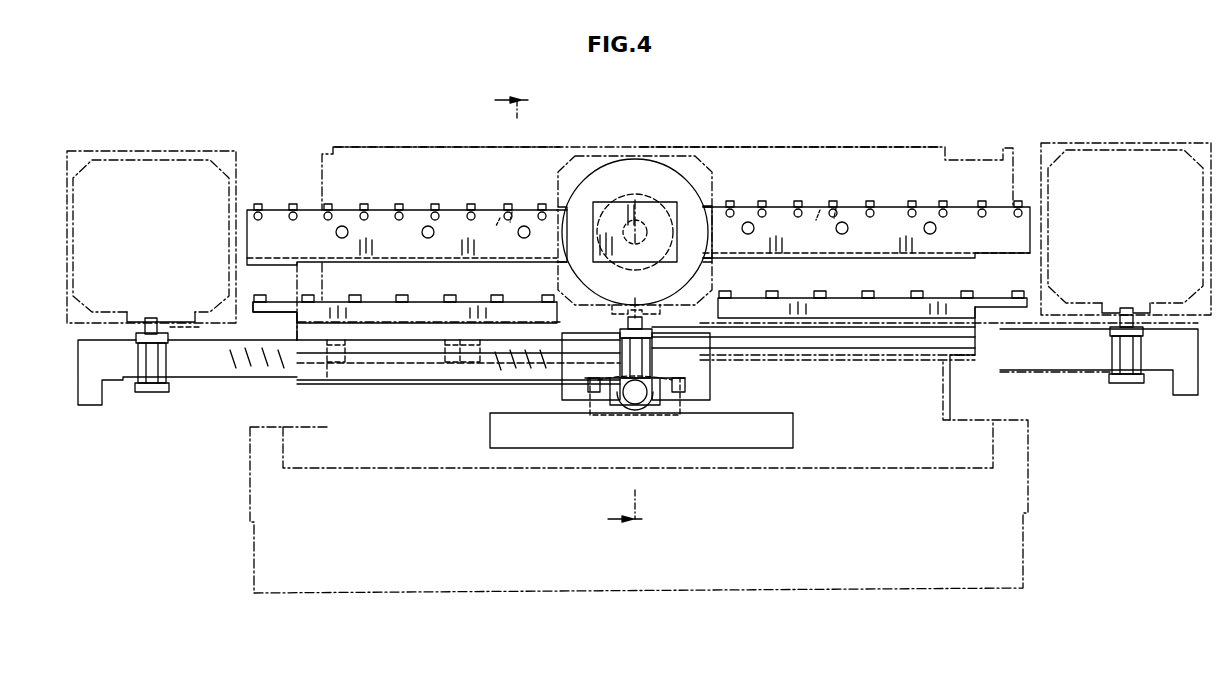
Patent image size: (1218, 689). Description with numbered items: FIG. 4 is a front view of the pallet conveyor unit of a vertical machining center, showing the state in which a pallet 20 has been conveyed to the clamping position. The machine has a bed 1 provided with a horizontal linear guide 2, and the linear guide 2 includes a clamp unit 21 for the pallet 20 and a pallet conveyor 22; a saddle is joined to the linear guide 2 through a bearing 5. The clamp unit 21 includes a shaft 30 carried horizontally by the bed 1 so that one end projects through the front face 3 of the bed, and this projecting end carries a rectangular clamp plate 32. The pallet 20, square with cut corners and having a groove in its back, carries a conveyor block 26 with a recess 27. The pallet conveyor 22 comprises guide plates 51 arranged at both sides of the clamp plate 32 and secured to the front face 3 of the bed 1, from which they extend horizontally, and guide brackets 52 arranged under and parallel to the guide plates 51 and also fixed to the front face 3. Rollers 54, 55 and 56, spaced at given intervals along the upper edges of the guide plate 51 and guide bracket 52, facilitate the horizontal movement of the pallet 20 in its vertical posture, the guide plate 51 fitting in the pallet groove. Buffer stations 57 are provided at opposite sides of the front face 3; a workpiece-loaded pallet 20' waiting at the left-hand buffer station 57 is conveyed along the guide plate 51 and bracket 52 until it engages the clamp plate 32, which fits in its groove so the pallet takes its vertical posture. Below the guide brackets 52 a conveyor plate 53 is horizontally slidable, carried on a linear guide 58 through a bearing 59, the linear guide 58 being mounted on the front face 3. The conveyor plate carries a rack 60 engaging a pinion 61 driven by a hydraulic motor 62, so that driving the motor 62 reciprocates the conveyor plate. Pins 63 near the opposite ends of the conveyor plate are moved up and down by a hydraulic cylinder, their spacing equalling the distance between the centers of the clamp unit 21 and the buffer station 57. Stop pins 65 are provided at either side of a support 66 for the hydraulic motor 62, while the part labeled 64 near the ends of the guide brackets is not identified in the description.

The bed 1 is at (1030, 455).
The horizontal linear guide 2 is at (855, 148).
The front face of the bed 3 is at (930, 150).
The bearing 5 is at (568, 312).
The pallet 20 is at (645, 206).
The workpiece-loaded pallet 20' is at (638, 211).
The clamp unit 21 is at (618, 183).
The pallet conveyor 22 is at (413, 172).
The conveyor block 26 is at (190, 318).
The recess 27 is at (150, 322).
The shaft 30 is at (640, 248).
The clamp plate 32 is at (650, 215).
The guide plates 51 is at (375, 215).
The guide brackets 52 is at (380, 312).
The conveyor plate 53 is at (265, 378).
The rollers 54 is at (470, 208).
The rollers 55 is at (508, 215).
The rollers 56 is at (497, 300).
The buffer stations 57 is at (130, 150).
The linear guide 58 is at (835, 340).
The bearing 59 is at (338, 370).
The rack 60 is at (393, 380).
The pinion 61 is at (645, 408).
The hydraulic motor 62 is at (600, 400).
The pins 63 is at (160, 366).
The bar end support 64 is at (290, 313).
The stop pins 65 is at (595, 390).
The support 66 is at (690, 412).